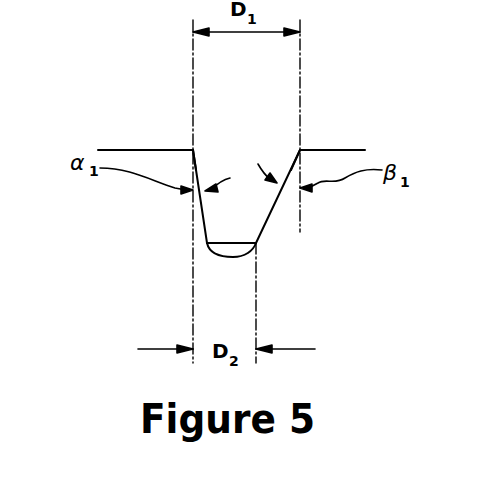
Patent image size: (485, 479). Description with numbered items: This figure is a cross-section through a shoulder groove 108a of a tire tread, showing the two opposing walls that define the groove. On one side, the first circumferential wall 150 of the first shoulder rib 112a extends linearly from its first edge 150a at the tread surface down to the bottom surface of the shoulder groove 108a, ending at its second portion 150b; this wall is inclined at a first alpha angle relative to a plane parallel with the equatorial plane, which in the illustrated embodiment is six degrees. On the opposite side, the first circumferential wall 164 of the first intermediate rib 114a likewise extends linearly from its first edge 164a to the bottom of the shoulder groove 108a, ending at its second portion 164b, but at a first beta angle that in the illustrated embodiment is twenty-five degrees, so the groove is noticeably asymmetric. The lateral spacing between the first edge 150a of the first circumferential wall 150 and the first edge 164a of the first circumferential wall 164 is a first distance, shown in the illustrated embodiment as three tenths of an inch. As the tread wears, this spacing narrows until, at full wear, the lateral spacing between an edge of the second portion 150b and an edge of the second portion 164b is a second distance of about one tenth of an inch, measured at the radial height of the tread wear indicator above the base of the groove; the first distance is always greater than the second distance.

The shoulder groove 108a is at (232, 258).
The first shoulder rib 112a is at (145, 150).
The first intermediate rib 114a is at (343, 150).
The first circumferential wall 150 is at (203, 218).
The first edge 150a is at (193, 150).
The second portion 150b is at (207, 247).
The first circumferential wall 164 is at (273, 207).
The first edge 164a is at (300, 150).
The second portion 164b is at (256, 243).